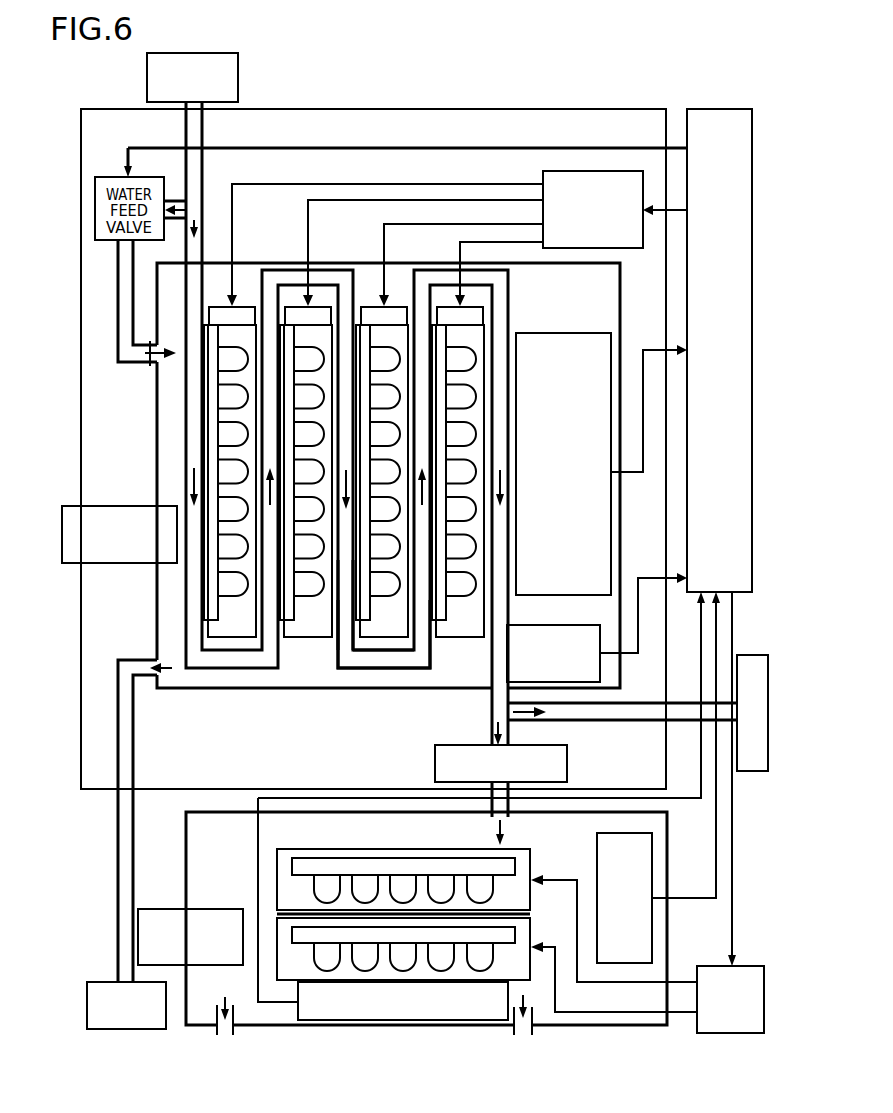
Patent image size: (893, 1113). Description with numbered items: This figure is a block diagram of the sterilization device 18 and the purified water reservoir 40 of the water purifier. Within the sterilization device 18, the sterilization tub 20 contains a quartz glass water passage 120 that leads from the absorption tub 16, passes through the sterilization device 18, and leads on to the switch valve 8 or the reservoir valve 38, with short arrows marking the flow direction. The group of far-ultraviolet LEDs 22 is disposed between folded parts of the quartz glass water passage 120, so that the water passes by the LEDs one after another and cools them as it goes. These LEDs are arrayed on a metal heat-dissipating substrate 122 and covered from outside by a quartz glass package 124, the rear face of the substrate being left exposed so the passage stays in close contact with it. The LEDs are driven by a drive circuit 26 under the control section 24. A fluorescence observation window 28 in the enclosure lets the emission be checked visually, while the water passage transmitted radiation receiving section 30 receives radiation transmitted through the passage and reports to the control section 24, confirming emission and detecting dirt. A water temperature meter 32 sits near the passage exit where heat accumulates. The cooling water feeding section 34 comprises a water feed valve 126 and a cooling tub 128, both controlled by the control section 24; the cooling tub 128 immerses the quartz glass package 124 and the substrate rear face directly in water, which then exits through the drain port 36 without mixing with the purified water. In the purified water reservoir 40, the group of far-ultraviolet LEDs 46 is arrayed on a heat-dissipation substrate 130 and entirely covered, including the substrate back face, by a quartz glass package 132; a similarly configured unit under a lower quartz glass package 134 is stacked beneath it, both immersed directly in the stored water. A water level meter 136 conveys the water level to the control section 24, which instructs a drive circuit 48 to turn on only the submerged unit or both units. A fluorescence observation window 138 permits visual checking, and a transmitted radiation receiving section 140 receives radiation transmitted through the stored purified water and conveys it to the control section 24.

The switch valve 8 is at (747, 772).
The absorption tub 16 is at (239, 90).
The sterilization device 18 is at (298, 109).
The sterilization tub 20 is at (204, 278).
The group of far-ultraviolet LEDs 22 is at (393, 608).
The control section 24 is at (702, 109).
The drive circuit 26 is at (543, 172).
The fluorescence observation window 28 is at (148, 563).
The water passage transmitted radiation receiving section 30 is at (540, 333).
The water temperature meter 32 is at (550, 626).
The cooling water feeding section 34 is at (148, 366).
The drain port 36 is at (137, 982).
The reservoir valve 38 is at (548, 745).
The purified water reservoir 40 is at (208, 812).
The group of far-ultraviolet LEDs 46 is at (310, 893).
The drive circuit 48 is at (727, 966).
The quartz glass water passage 120 is at (399, 669).
The heat-dissipating substrate 122 is at (350, 614).
The quartz glass package 124 is at (400, 640).
The water feed valve 126 is at (166, 192).
The cooling tub 128 is at (247, 689).
The heat-dissipation substrate 130 is at (292, 860).
The quartz glass package 132 is at (356, 799).
The lower quartz glass package 134 is at (277, 915).
The water level meter 136 is at (597, 850).
The fluorescence observation window 138 is at (150, 909).
The transmitted radiation receiving section 140 is at (298, 992).